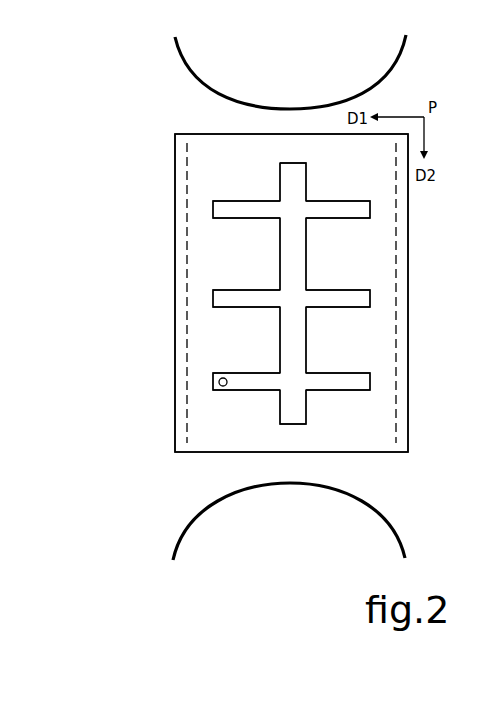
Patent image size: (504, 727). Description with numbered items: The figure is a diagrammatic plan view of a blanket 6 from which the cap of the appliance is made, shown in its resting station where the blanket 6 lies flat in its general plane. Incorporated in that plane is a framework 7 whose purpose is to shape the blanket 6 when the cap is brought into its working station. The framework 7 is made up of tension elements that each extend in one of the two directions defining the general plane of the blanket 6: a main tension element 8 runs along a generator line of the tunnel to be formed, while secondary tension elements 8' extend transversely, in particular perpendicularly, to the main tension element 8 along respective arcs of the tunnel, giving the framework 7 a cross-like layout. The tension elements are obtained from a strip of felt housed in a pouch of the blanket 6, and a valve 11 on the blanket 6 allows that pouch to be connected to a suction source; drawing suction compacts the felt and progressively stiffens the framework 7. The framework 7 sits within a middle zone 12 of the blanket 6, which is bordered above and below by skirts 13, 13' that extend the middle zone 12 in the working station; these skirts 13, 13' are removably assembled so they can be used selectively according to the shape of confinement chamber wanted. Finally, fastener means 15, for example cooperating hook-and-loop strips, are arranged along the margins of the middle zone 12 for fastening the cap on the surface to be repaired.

The blanket 6 is at (398, 470).
The framework 7 is at (324, 406).
The main tension element 8 is at (308, 293).
The secondary tension elements 8' is at (291, 322).
The valve 11 is at (223, 378).
The middle zone 12 is at (230, 171).
The skirt 13 is at (289, 521).
The skirt 13' is at (290, 72).
The fastener means 15 is at (188, 254).